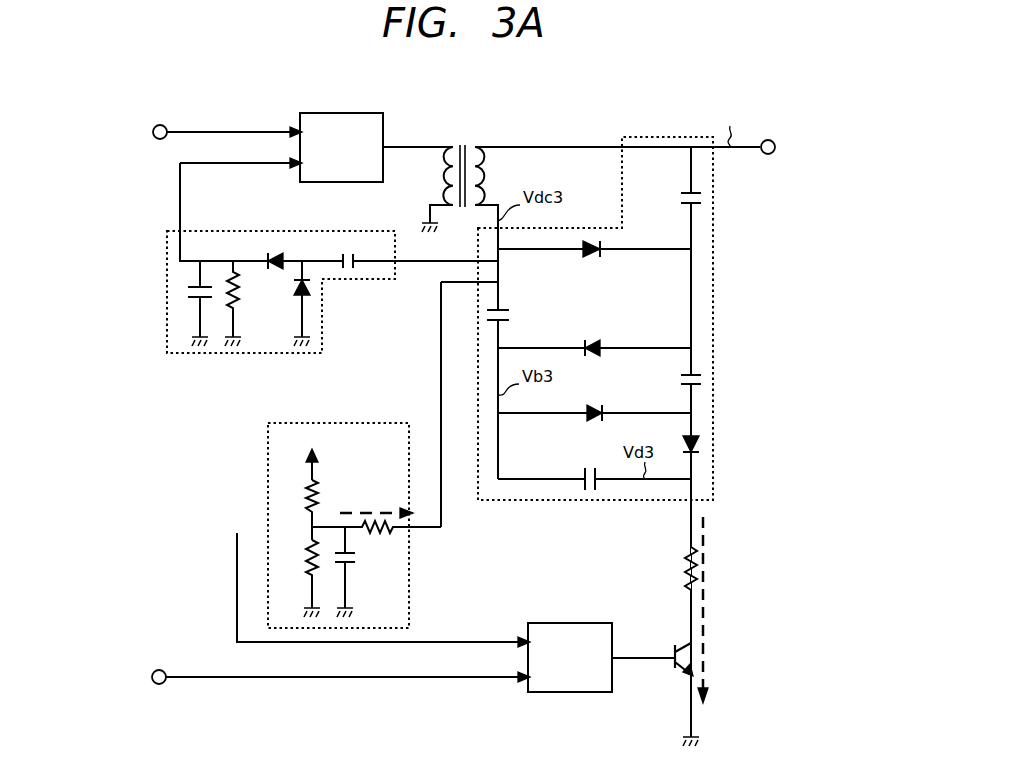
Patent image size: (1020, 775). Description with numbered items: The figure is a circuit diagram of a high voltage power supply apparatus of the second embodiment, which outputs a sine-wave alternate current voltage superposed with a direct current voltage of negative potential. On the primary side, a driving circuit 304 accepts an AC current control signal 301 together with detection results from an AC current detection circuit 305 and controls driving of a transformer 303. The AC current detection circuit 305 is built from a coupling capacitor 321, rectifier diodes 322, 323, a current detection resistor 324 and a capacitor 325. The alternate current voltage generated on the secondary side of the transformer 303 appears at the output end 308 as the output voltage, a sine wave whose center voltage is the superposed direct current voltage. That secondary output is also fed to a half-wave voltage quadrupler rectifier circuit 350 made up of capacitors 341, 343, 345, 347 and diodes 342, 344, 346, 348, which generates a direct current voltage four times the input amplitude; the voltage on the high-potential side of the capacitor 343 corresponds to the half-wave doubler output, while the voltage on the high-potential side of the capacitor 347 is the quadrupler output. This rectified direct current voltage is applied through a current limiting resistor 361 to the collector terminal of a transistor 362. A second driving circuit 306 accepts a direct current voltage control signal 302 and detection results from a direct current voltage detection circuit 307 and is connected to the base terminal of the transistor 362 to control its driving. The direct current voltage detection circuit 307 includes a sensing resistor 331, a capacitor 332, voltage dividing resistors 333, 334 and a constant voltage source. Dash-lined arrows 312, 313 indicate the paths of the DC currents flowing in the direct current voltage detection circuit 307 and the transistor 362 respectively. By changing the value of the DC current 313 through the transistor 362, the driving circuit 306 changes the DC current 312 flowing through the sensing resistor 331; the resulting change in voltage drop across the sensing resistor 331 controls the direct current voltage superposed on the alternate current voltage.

The AC current control signal 301 is at (164, 124).
The direct current voltage control signal 302 is at (164, 669).
The transformer 303 is at (463, 145).
The driving circuit 304 is at (343, 113).
The AC current detection circuit 305 is at (222, 231).
The driving circuit 306 is at (574, 623).
The direct current voltage detection circuit 307 is at (364, 423).
The output end 308 is at (771, 139).
The DC current 312 is at (372, 509).
The DC current 313 is at (706, 530).
The coupling capacitor 321 is at (346, 253).
The rectifier diode 322 is at (298, 291).
The rectifier diode 323 is at (275, 253).
The current detection resistor 324 is at (230, 310).
The capacitor 325 is at (196, 300).
The sensing resistor 331 is at (382, 534).
The capacitor 332 is at (353, 566).
The voltage dividing resistor 333 is at (305, 493).
The voltage dividing resistor 334 is at (305, 555).
The capacitor 341 is at (682, 194).
The diode 342 is at (590, 242).
The capacitor 343 is at (508, 313).
The diode 344 is at (597, 340).
The capacitor 345 is at (701, 379).
The diode 346 is at (594, 405).
The capacitor 347 is at (584, 468).
The diode 348 is at (701, 444).
The half-wave voltage quadrupler rectifier circuit 350 is at (713, 318).
The current limiting resistor 361 is at (685, 566).
The transistor 362 is at (678, 645).